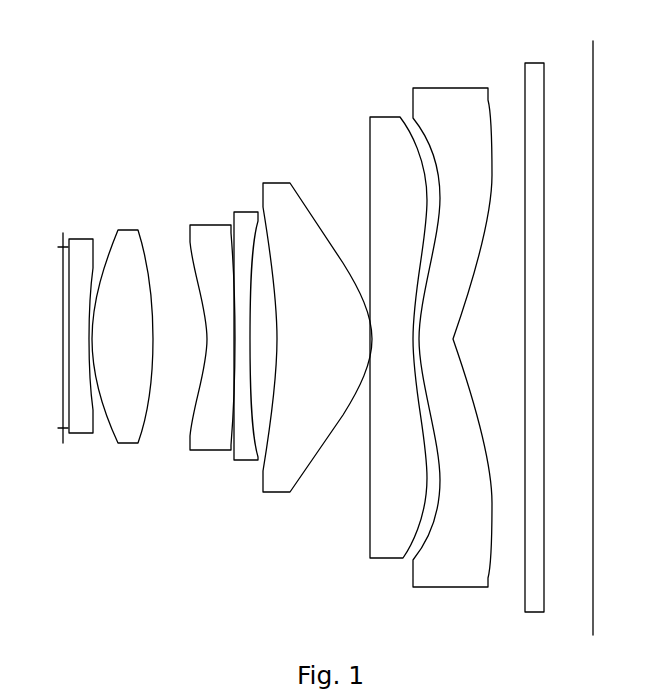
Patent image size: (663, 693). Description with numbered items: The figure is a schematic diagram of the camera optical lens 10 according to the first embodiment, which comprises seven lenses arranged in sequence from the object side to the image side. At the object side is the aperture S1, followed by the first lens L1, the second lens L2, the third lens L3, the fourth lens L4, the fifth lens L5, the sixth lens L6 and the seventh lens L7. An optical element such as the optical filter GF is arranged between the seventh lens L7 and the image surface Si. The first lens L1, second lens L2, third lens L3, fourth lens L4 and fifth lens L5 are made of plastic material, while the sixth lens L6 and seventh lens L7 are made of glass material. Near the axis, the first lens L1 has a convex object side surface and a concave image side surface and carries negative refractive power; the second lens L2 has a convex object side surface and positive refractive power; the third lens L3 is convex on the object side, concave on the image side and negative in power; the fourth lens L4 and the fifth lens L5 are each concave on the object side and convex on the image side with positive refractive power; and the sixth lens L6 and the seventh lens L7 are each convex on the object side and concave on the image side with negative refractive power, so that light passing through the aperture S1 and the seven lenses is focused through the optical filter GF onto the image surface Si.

The camera optical lens 10 is at (343, 83).
The aperture S1 is at (52, 330).
The first lens L1 is at (79, 322).
The second lens L2 is at (122, 322).
The third lens L3 is at (212, 326).
The fourth lens L4 is at (244, 318).
The fifth lens L5 is at (317, 322).
The sixth lens L6 is at (398, 327).
The seventh lens L7 is at (452, 323).
The optical filter GF is at (528, 324).
The image surface Si is at (584, 327).